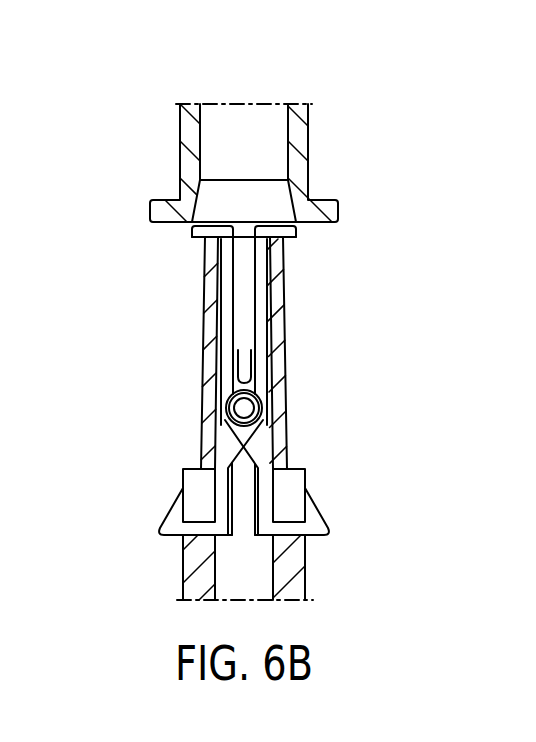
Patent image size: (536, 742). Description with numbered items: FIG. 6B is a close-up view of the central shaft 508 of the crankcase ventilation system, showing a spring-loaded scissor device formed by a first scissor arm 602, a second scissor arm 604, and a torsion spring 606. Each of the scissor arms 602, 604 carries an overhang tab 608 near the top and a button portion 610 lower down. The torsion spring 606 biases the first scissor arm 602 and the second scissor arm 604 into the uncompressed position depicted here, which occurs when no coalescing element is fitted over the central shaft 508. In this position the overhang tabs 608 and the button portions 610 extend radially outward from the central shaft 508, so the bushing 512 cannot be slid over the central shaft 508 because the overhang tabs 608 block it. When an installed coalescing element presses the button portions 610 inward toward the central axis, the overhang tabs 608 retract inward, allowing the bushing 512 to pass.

The bushing 512 is at (300, 138).
The first scissor arm 602 is at (212, 343).
The second scissor arm 604 is at (262, 320).
The torsion spring 606 is at (262, 408).
The overhang tab 608 is at (193, 230).
The button portion 610 is at (178, 512).
The central shaft 508 is at (283, 572).